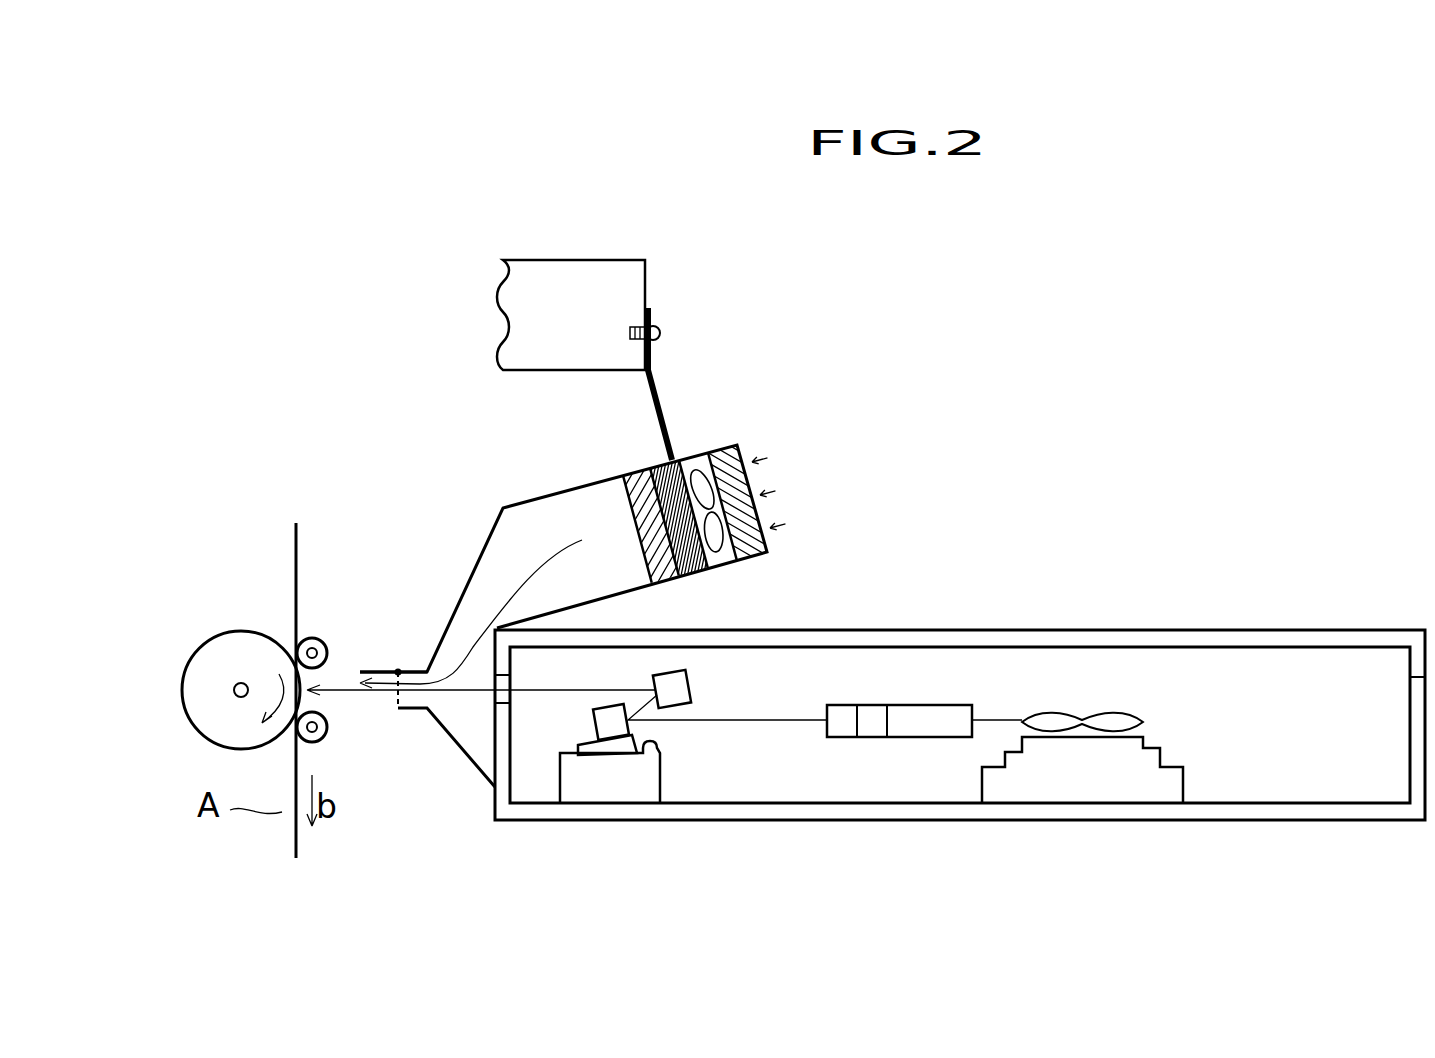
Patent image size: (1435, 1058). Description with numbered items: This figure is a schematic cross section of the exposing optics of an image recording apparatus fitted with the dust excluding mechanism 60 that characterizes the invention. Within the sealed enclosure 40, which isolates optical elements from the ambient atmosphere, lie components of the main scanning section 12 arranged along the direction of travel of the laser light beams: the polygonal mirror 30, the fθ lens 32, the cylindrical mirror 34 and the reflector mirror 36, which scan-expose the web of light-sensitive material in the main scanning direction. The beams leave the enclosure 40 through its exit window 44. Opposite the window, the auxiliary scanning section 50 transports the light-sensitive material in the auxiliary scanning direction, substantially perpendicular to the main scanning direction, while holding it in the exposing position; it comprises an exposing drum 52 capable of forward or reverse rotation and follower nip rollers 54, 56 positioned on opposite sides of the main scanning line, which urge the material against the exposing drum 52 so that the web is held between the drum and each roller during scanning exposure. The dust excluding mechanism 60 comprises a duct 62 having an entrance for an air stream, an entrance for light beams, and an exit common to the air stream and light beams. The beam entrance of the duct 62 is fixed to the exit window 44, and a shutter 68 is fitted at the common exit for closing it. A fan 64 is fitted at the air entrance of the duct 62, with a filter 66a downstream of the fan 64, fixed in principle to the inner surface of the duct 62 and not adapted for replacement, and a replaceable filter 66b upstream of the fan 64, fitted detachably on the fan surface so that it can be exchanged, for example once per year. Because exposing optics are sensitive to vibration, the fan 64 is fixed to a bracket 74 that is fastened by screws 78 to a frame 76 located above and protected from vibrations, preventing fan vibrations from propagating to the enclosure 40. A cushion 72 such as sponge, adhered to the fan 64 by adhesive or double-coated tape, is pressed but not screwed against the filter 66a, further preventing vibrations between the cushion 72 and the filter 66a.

The main scanning section 12 is at (1073, 689).
The polygonal mirror 30 is at (1140, 718).
The fθ lens 32 is at (908, 727).
The cylindrical mirror 34 is at (595, 720).
The reflector mirror 36 is at (688, 680).
The sealed enclosure 40 is at (1290, 813).
The exit window 44 is at (504, 683).
The auxiliary scanning section 50 is at (256, 488).
The exposing drum 52 is at (223, 628).
The follower nip roller 54 is at (324, 640).
The follower nip roller 56 is at (326, 741).
The dust excluding mechanism 60 is at (801, 589).
The duct 62 is at (520, 500).
The fan 64 is at (693, 462).
The filter 66a is at (638, 479).
The filter 66b is at (732, 446).
The shutter 68 is at (373, 670).
The cushion 72 is at (698, 575).
The bracket 74 is at (656, 421).
The frame 76 is at (580, 259).
The screws 78 is at (660, 328).